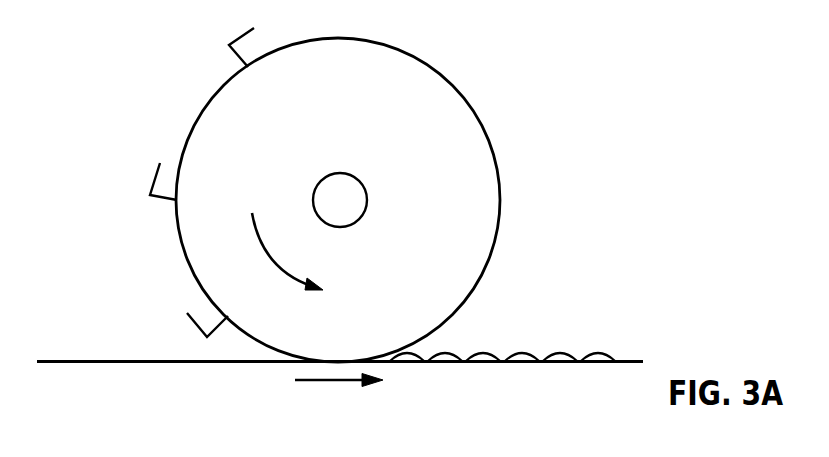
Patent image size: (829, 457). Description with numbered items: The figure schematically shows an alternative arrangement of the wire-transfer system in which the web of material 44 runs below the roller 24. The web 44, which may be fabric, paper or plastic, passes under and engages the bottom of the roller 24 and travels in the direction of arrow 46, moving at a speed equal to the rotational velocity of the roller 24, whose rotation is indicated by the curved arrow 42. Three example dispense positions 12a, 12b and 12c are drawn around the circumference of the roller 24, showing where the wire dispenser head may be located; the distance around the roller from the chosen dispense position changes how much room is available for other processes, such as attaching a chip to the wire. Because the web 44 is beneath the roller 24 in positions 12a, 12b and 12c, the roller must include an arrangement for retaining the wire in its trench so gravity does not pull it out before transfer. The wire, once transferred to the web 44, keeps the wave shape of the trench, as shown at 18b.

The roller 24 is at (453, 162).
The dispense position 12a is at (239, 57).
The dispense position 12b is at (152, 196).
The dispense position 12c is at (192, 320).
The rotation direction of roller 42 is at (262, 243).
The web of material 44 is at (85, 363).
The transferred wire 18b is at (522, 353).
The direction of travel 46 is at (333, 382).